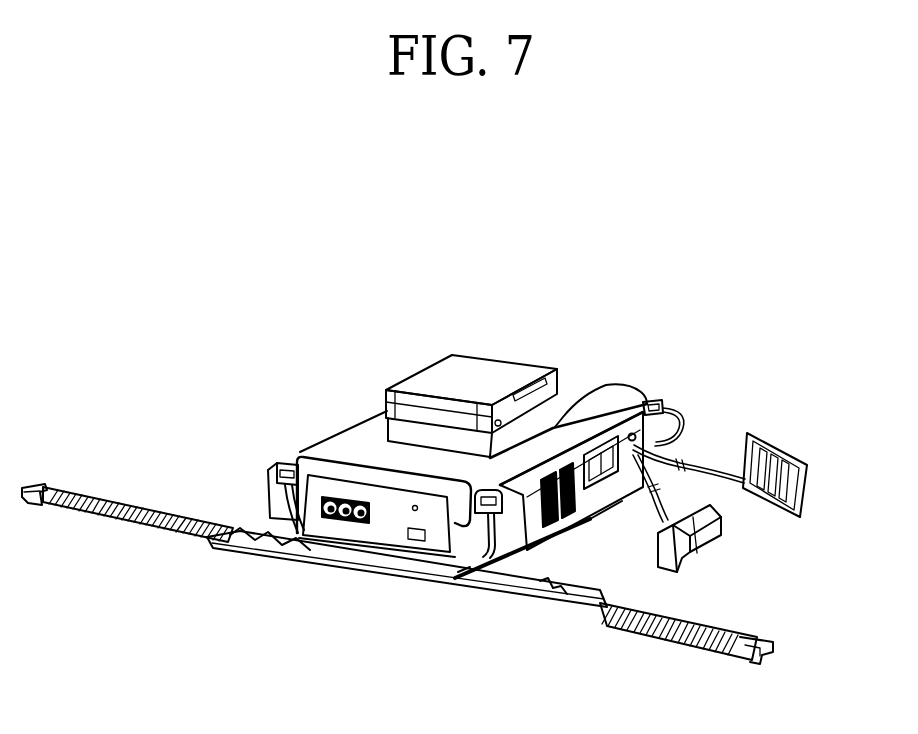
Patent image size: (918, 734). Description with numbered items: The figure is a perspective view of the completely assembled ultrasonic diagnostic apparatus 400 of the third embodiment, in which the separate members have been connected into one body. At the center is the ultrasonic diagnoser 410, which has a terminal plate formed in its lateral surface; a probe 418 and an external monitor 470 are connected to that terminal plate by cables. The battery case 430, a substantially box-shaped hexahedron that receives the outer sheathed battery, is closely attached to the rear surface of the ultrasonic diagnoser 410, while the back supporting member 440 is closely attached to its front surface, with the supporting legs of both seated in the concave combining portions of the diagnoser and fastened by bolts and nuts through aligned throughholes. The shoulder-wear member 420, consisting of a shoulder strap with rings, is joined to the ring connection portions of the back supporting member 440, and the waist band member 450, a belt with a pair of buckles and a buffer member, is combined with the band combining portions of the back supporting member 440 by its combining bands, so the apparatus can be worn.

The ultrasonic diagnostic apparatus 400 is at (823, 322).
The ultrasonic diagnoser 410 is at (598, 423).
The probe 418 is at (707, 540).
The shoulder-wear member 420 is at (609, 528).
The battery case 430 is at (503, 352).
The back supporting member 440 is at (443, 572).
The waist band member 450 is at (645, 645).
The external monitor 470 is at (777, 447).